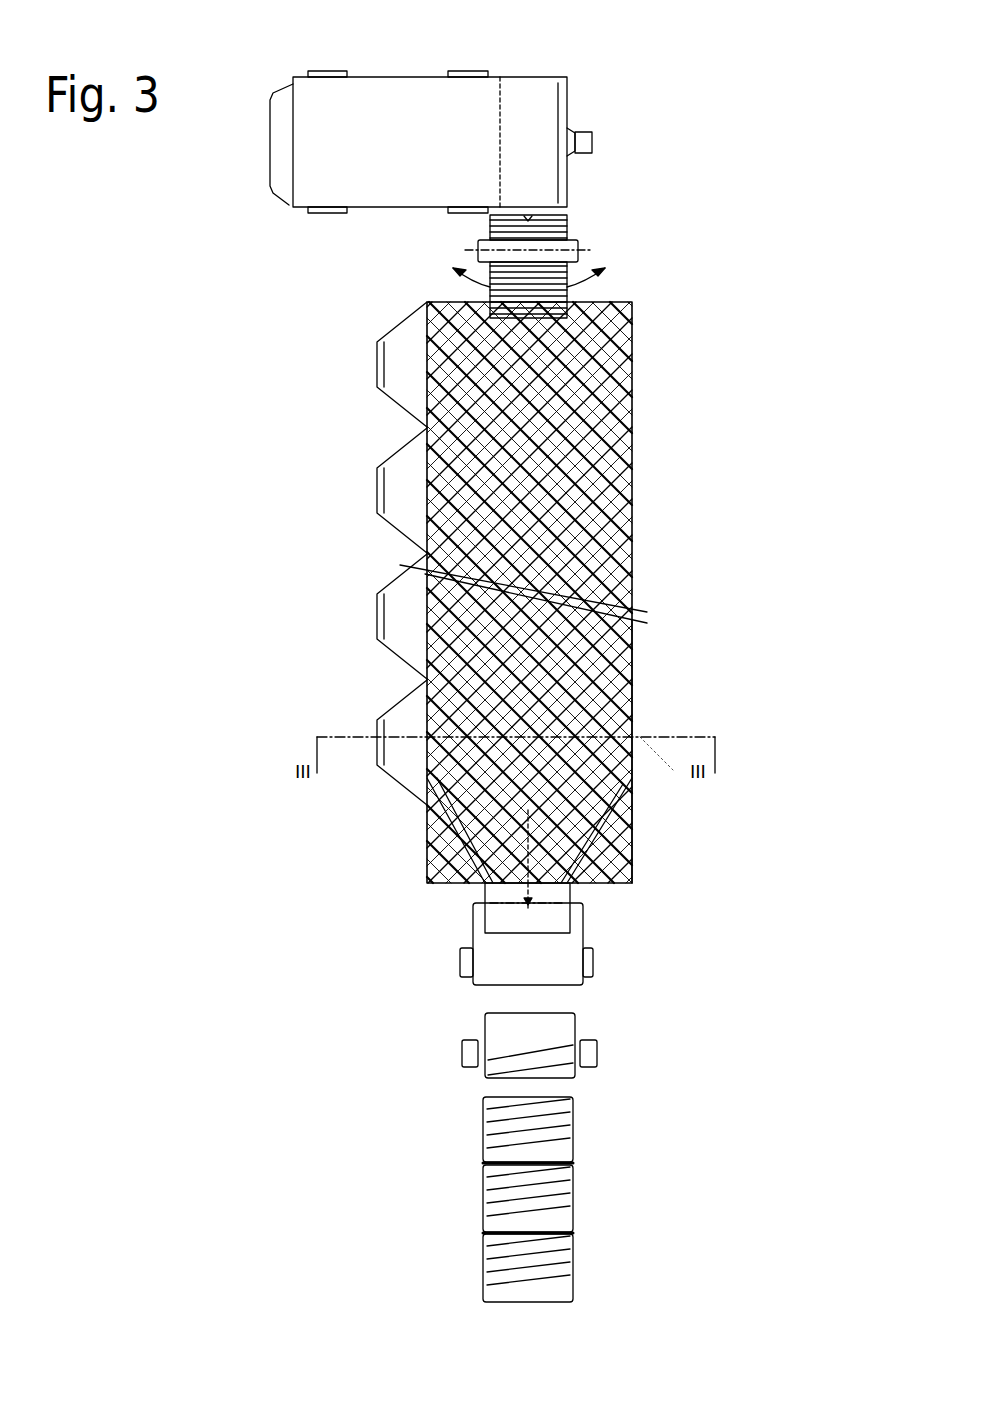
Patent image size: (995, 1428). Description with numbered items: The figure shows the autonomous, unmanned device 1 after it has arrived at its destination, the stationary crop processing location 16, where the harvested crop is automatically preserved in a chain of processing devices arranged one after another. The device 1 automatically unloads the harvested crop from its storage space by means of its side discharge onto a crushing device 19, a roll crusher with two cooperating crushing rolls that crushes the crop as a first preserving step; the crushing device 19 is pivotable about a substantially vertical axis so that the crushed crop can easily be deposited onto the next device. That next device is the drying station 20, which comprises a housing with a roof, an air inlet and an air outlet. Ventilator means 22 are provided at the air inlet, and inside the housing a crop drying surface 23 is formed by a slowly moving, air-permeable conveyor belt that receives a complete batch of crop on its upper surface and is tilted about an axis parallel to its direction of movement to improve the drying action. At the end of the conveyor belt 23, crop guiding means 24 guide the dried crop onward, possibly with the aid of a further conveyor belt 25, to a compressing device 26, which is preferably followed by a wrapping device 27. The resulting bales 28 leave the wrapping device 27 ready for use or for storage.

The unmanned device 1 is at (578, 93).
The crushing device 19 is at (586, 240).
The stationary crop processing location 16 is at (652, 385).
The drying station 20 is at (645, 680).
The ventilator means 22 is at (377, 510).
The crop drying surface 23 is at (603, 516).
The crop guiding means 24 is at (632, 842).
The further conveyor belt 25 is at (563, 898).
The compressing device 26 is at (555, 950).
The wrapping device 27 is at (555, 1033).
The bales 28 is at (570, 1141).